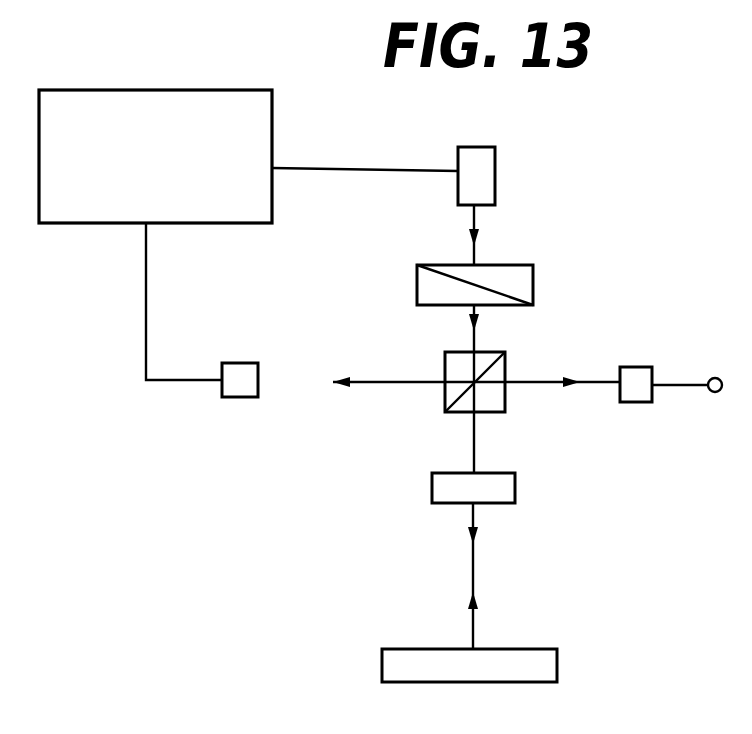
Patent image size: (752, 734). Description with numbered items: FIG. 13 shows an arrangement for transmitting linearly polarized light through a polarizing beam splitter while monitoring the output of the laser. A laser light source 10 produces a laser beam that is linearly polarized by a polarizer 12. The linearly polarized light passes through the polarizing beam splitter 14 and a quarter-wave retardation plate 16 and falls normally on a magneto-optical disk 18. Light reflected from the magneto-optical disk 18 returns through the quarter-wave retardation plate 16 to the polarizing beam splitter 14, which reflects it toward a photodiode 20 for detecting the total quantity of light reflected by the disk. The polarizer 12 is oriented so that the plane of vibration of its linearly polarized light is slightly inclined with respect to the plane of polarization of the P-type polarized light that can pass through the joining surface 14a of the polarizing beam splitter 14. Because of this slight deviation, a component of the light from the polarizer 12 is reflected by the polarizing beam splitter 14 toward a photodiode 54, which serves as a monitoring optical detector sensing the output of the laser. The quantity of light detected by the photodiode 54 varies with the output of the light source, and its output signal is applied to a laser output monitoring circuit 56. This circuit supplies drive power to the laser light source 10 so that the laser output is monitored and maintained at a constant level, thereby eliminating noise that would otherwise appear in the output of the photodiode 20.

The laser output monitoring circuit 56 is at (242, 100).
The laser light source 10 is at (487, 178).
The polarizer 12 is at (525, 278).
The polarizing beam splitter 14 is at (447, 363).
The joining surface 14a is at (443, 397).
The quarter-wave retardation plate 16 is at (440, 484).
The magneto-optical disk 18 is at (390, 663).
The photodiode 20 is at (638, 375).
The photodiode 54 is at (243, 392).